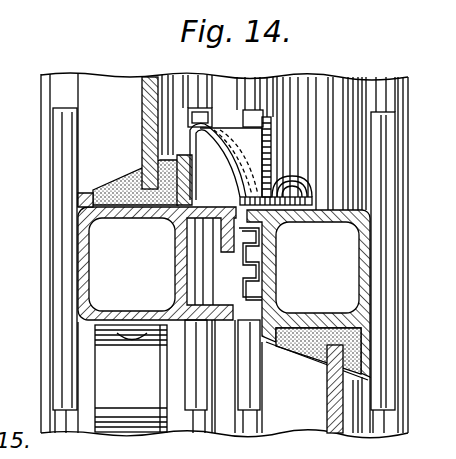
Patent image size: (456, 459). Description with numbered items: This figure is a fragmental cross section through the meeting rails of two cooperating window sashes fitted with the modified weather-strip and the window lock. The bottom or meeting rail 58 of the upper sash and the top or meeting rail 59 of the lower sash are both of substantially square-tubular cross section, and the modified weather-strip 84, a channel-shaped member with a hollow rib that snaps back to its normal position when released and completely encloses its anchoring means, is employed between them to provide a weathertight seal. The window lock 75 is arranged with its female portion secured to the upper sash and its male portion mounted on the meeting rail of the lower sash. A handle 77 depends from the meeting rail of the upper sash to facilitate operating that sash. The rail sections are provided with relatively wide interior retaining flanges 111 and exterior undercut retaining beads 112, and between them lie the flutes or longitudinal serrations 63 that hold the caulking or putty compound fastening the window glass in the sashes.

The meeting rail 58 is at (78, 262).
The meeting rail 59 is at (372, 212).
The flutes 63 is at (108, 226).
The window lock 75 is at (272, 128).
The handle 77 is at (113, 400).
The modified weather-strip 84 is at (386, 156).
The interior retaining flanges 111 is at (178, 157).
The exterior undercut retaining beads 112 is at (86, 190).